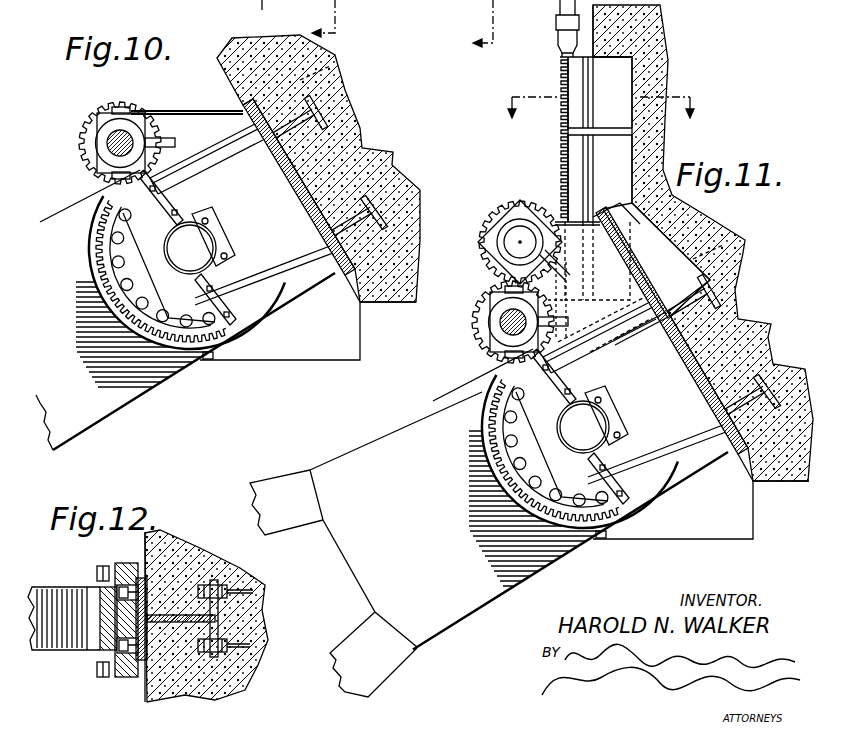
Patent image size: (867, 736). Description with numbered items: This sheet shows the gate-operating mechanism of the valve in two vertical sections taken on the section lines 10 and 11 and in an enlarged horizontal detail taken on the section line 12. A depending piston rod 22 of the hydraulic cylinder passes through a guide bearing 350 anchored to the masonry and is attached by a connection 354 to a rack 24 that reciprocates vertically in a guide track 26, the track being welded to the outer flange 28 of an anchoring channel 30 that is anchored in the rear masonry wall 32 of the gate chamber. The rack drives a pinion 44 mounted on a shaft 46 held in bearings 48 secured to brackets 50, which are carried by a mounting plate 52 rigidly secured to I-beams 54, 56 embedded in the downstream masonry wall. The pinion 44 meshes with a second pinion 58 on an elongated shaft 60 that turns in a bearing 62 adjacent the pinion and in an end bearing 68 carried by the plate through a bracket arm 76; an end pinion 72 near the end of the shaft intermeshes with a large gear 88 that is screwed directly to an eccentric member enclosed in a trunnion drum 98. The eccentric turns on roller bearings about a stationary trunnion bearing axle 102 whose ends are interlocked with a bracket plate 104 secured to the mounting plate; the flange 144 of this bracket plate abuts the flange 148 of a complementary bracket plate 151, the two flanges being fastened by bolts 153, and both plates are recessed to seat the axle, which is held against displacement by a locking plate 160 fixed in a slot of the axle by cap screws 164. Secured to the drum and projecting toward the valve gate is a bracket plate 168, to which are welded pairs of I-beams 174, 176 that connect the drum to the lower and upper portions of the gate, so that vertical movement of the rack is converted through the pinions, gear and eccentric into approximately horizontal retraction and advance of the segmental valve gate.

In FIG. 10, the section line 10— 10 is at (317, 29).
In FIG. 11, the section line 11— 11 is at (478, 37).
In FIG. 11, the section line 12— 12 is at (598, 110).
In FIG. 11, the piston rod 22 is at (558, 6).
In FIG. 11, the rack 24 is at (562, 116).
In FIG. 12, the rack 24 is at (100, 655).
In FIG. 12, the guide track 26 is at (102, 568).
In FIG. 11, the outer flange 28 is at (568, 88).
In FIG. 12, the outer flange 28 is at (141, 578).
In FIG. 11, the anchoring channel 30 is at (613, 188).
In FIG. 12, the anchoring channel 30 is at (150, 655).
In FIG. 11, the rear masonry wall 32 is at (600, 56).
In FIG. 12, the rear masonry wall 32 is at (147, 685).
In FIG. 11, the pinion 44 is at (515, 200).
In FIG. 12, the pinion 44 is at (72, 598).
In FIG. 11, the shaft 46 is at (518, 242).
In FIG. 11, the bearings 48 is at (508, 215).
In FIG. 11, the brackets 50 is at (557, 213).
In FIG. 10, the mounting plate 52 is at (292, 182).
In FIG. 11, the mounting plate 52 is at (674, 344).
In FIG. 10, the I-beam 54 is at (322, 117).
In FIG. 11, the I-beam 54 is at (724, 330).
In FIG. 10, the I-beam 56 is at (397, 205).
In FIG. 11, the I-beam 56 is at (703, 243).
In FIG. 11, the second pinion 58 is at (484, 322).
In FIG. 10, the elongated shaft 60 is at (138, 116).
In FIG. 11, the elongated shaft 60 is at (502, 335).
In FIG. 11, the bearing 62 is at (495, 322).
In FIG. 10, the end bearing 68 is at (108, 125).
In FIG. 10, the end pinion 72 is at (80, 150).
In FIG. 10, the bracket arm 76 is at (208, 122).
In FIG. 10, the large gear 88 is at (108, 205).
In FIG. 11, the large gear 88 is at (518, 428).
In FIG. 10, the trunnion drum 98 is at (88, 238).
In FIG. 11, the trunnion drum 98 is at (528, 450).
In FIG. 10, the stationary trunnion bearing axle 102 is at (183, 234).
In FIG. 11, the stationary trunnion bearing axle 102 is at (599, 357).
In FIG. 10, the bracket plate 104 is at (292, 285).
In FIG. 11, the bracket plate 104 is at (661, 454).
In FIG. 10, the flange 144 is at (258, 333).
In FIG. 11, the flange 144 is at (595, 451).
In FIG. 10, the flange 148 is at (238, 345).
In FIG. 11, the flange 148 is at (701, 521).
In FIG. 10, the complementary bracket plate 151 is at (206, 368).
In FIG. 11, the complementary bracket plate 151 is at (611, 558).
In FIG. 10, the bolts 153 is at (265, 316).
In FIG. 11, the bolts 153 is at (626, 431).
In FIG. 10, the locking plate 160 is at (214, 226).
In FIG. 11, the locking plate 160 is at (605, 416).
In FIG. 10, the cap screws 164 is at (232, 240).
In FIG. 11, the cap screws 164 is at (632, 415).
In FIG. 10, the bracket plate 168 is at (166, 382).
In FIG. 11, the bracket plate 168 is at (570, 547).
In FIG. 11, the I-beams 174 is at (402, 653).
In FIG. 11, the I-beams 176 is at (304, 517).
In FIG. 10, the guide bearing 350 is at (250, 2).
In FIG. 11, the guide bearing 350 is at (616, 3).
In FIG. 11, the connection 354 is at (558, 30).